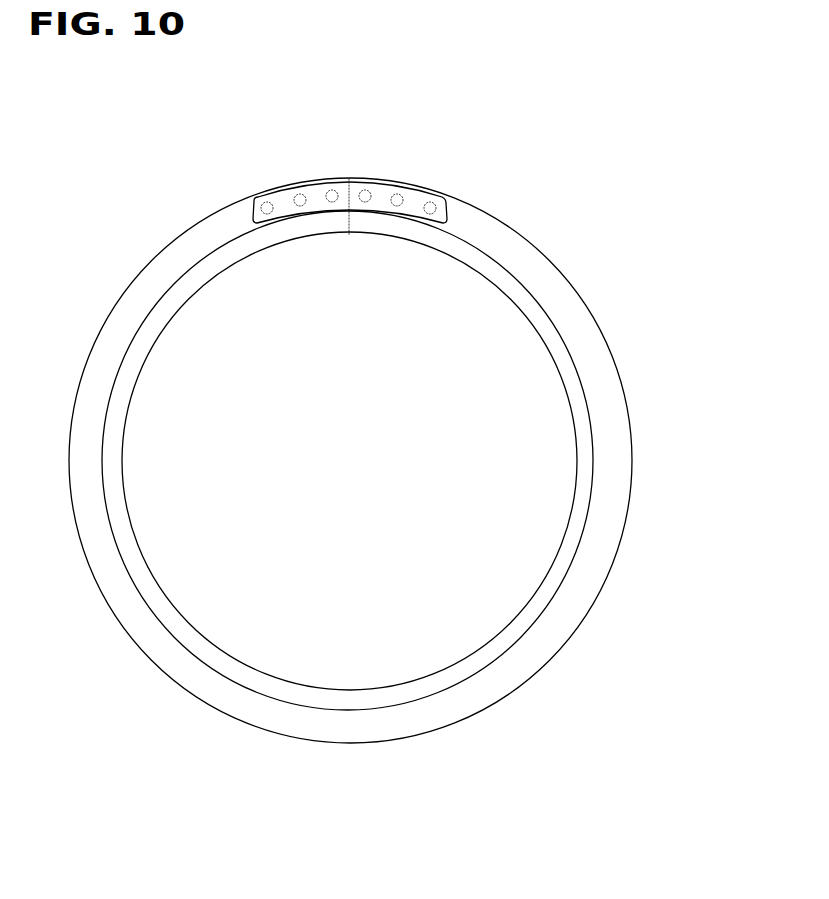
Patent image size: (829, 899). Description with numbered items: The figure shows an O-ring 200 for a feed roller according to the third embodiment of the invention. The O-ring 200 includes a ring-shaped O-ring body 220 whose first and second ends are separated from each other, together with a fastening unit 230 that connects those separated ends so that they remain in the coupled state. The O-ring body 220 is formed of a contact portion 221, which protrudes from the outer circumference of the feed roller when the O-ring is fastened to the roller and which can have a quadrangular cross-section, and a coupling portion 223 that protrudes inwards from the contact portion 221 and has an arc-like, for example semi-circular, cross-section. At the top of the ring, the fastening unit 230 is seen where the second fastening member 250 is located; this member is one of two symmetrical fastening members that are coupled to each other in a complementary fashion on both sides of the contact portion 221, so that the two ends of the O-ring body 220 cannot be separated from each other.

The O-ring 200 is at (632, 258).
The O-ring body 220 is at (697, 432).
The contact portion 221 is at (622, 421).
The coupling portion 223 is at (585, 467).
The fastening unit 230 is at (438, 197).
The second fastening member 250 is at (390, 183).